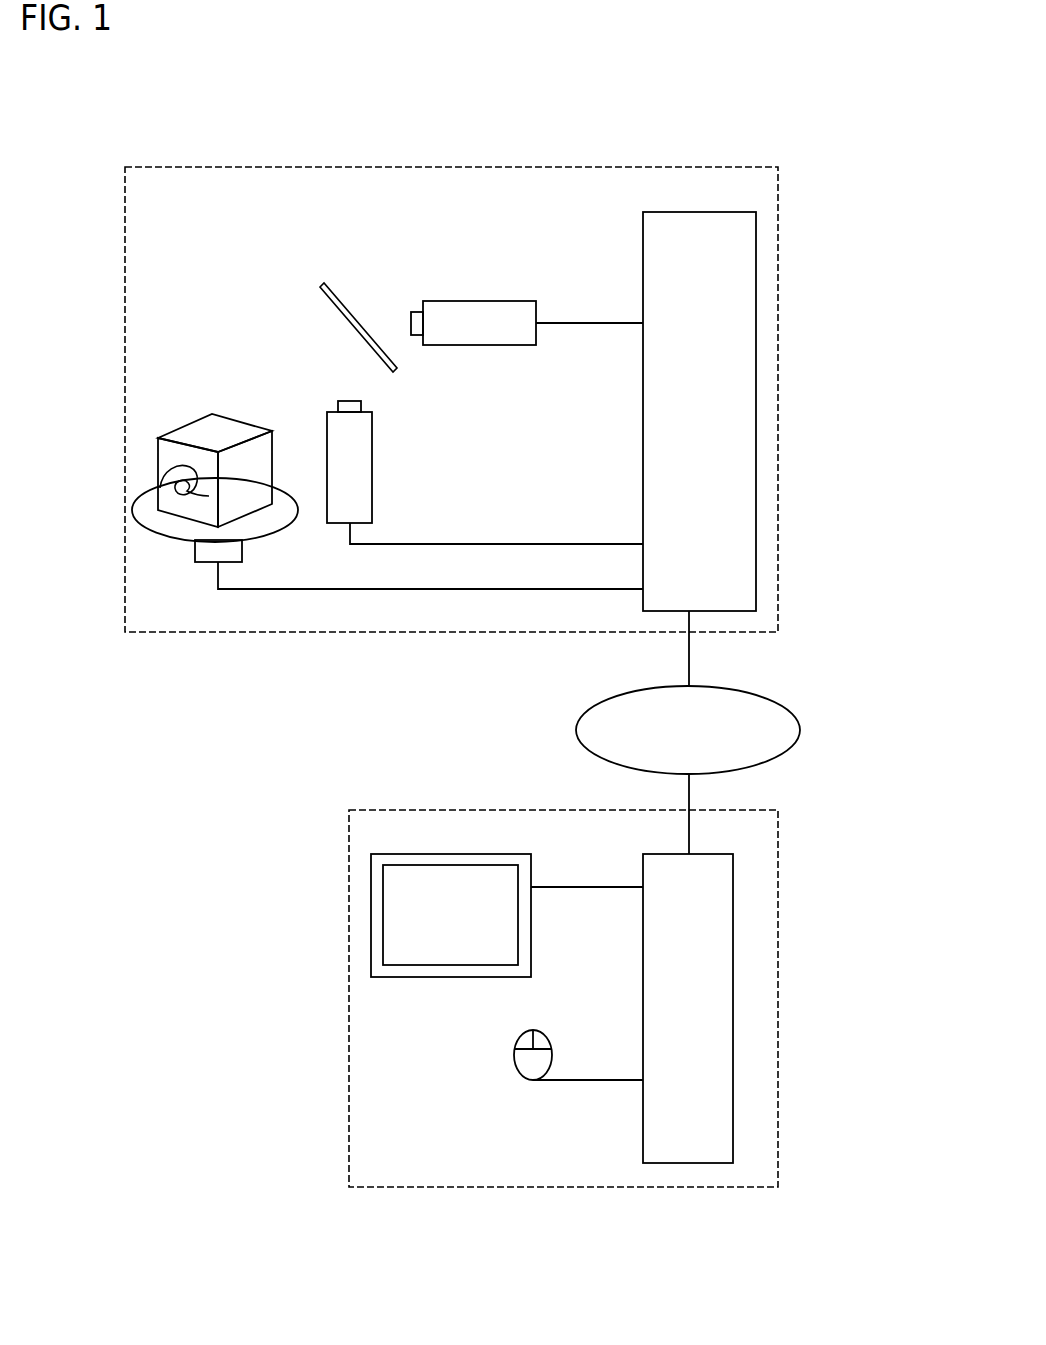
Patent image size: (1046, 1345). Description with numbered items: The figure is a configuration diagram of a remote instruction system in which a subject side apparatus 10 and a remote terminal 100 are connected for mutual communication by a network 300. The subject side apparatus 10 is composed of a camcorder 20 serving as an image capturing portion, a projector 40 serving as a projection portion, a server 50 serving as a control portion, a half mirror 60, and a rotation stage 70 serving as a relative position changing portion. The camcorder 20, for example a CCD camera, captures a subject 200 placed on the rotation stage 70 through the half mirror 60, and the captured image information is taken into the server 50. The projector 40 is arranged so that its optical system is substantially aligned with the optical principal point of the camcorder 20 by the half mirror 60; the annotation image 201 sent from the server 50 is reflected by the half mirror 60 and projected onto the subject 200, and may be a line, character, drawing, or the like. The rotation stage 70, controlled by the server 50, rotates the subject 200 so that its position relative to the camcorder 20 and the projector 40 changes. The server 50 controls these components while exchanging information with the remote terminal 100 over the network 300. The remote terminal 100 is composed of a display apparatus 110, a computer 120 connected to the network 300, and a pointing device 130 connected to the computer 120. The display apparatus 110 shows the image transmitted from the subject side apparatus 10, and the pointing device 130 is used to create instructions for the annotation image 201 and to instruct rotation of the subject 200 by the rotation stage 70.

The subject side apparatus 10 is at (463, 167).
The camcorder 20 is at (432, 346).
The projector 40 is at (372, 478).
The server 50 is at (708, 212).
The half mirror 60 is at (346, 306).
The rotation stage 70 is at (283, 482).
The remote terminal 100 is at (758, 810).
The display apparatus 110 is at (490, 854).
The computer 120 is at (700, 855).
The pointing device 130 is at (544, 1036).
The subject 200 is at (222, 418).
The annotation image 201 is at (170, 448).
The network 300 is at (758, 696).